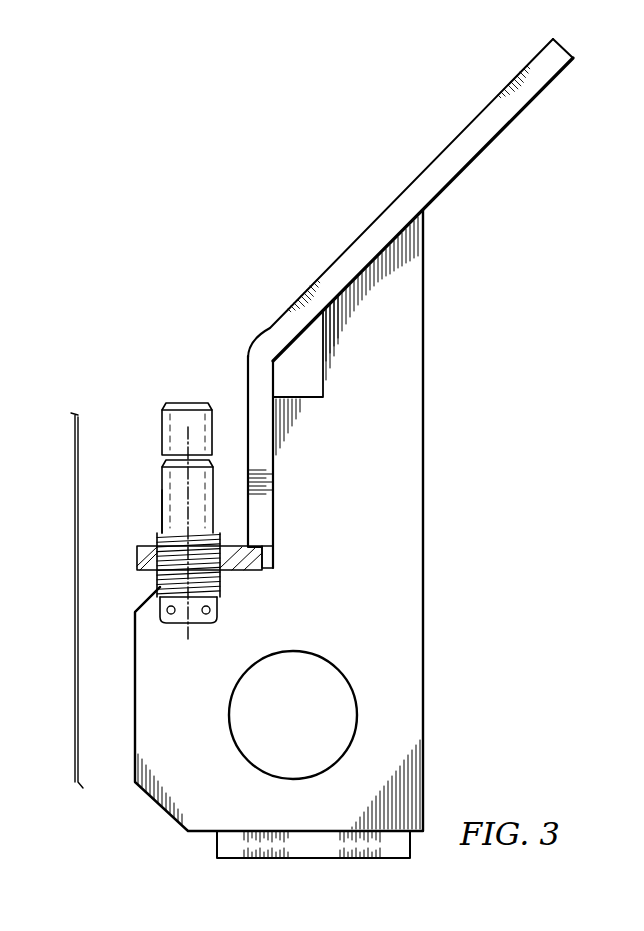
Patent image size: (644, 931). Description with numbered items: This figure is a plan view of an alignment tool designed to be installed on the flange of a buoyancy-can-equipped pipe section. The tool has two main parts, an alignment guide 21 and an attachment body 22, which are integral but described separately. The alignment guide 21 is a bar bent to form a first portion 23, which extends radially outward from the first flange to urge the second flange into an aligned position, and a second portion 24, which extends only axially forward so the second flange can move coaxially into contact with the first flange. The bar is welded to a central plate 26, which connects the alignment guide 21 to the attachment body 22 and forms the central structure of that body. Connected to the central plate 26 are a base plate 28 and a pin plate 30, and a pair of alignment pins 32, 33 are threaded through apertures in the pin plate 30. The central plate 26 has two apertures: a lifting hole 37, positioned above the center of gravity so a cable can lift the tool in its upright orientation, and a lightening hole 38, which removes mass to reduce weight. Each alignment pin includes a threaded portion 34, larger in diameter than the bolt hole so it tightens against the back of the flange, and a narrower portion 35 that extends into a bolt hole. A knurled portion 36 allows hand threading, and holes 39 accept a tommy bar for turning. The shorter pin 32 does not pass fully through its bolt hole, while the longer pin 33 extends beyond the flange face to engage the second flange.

The alignment guide 21 is at (243, 292).
The attachment body 22 is at (76, 588).
The first portion 23 is at (437, 157).
The second portion 24 is at (248, 384).
The central plate 26 is at (424, 548).
The base plate 28 is at (217, 846).
The pin plate 30 is at (242, 572).
The alignment pin 32 is at (151, 492).
The alignment pin 33 is at (153, 428).
The threaded portion 34 is at (157, 578).
The narrower portion 35 is at (162, 515).
The knurled portion 36 is at (173, 625).
The lifting hole 37 is at (289, 383).
The lightening hole 38 is at (282, 727).
The holes 39 is at (204, 615).